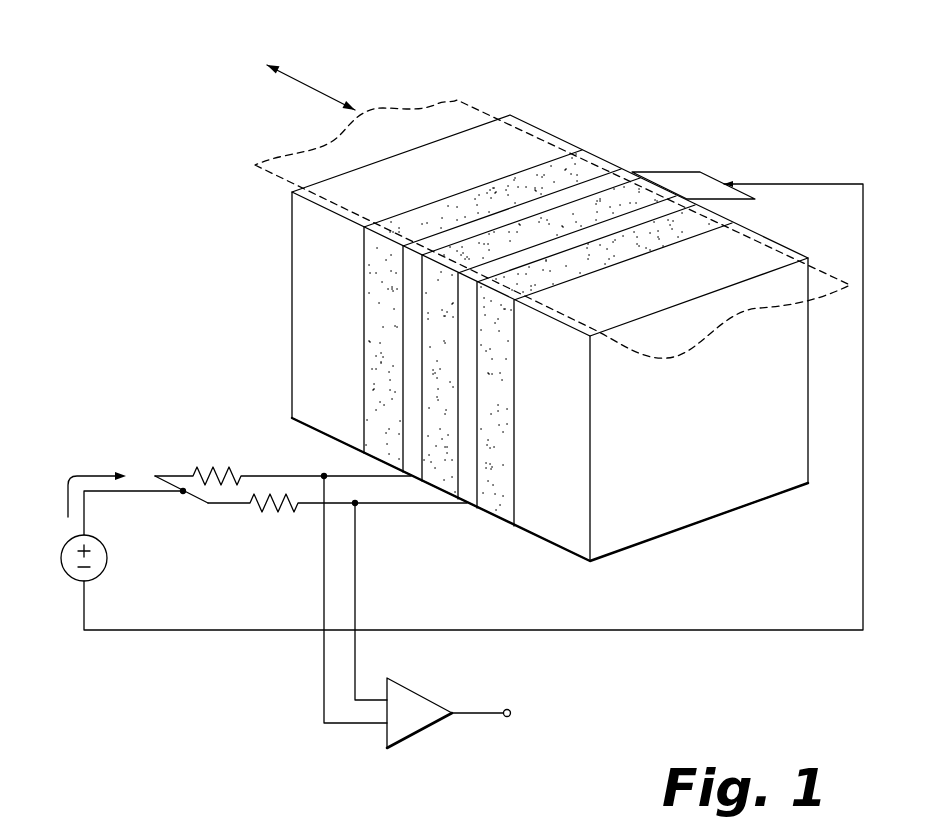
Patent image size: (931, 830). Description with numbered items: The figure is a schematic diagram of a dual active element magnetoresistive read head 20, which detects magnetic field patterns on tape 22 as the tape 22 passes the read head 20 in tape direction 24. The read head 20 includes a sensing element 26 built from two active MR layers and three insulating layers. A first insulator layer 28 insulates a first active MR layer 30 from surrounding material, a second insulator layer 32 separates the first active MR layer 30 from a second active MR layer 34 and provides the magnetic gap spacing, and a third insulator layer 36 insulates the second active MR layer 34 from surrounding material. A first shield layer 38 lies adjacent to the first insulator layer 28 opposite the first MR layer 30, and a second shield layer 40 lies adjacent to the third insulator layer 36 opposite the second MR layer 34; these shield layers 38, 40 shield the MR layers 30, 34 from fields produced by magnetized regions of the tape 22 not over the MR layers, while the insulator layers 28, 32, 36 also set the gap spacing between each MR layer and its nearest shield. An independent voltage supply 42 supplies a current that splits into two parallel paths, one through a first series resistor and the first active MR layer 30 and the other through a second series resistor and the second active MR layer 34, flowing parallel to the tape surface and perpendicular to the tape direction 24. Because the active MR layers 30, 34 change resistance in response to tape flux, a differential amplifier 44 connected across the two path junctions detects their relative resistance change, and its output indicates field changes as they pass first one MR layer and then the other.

The magnetoresistive read head 20 is at (116, 273).
The tape 22 is at (425, 135).
The tape direction 24 is at (323, 92).
The sensing element 26 is at (728, 545).
The first insulator layer 28 is at (375, 267).
The first active MR layer 30 is at (407, 307).
The second insulator layer 32 is at (437, 352).
The second active MR layer 34 is at (462, 390).
The third insulator layer 36 is at (493, 435).
The first shield layer 38 is at (333, 231).
The second shield layer 40 is at (552, 485).
The independent voltage supply 42 is at (108, 558).
The differential amplifier 44 is at (415, 735).